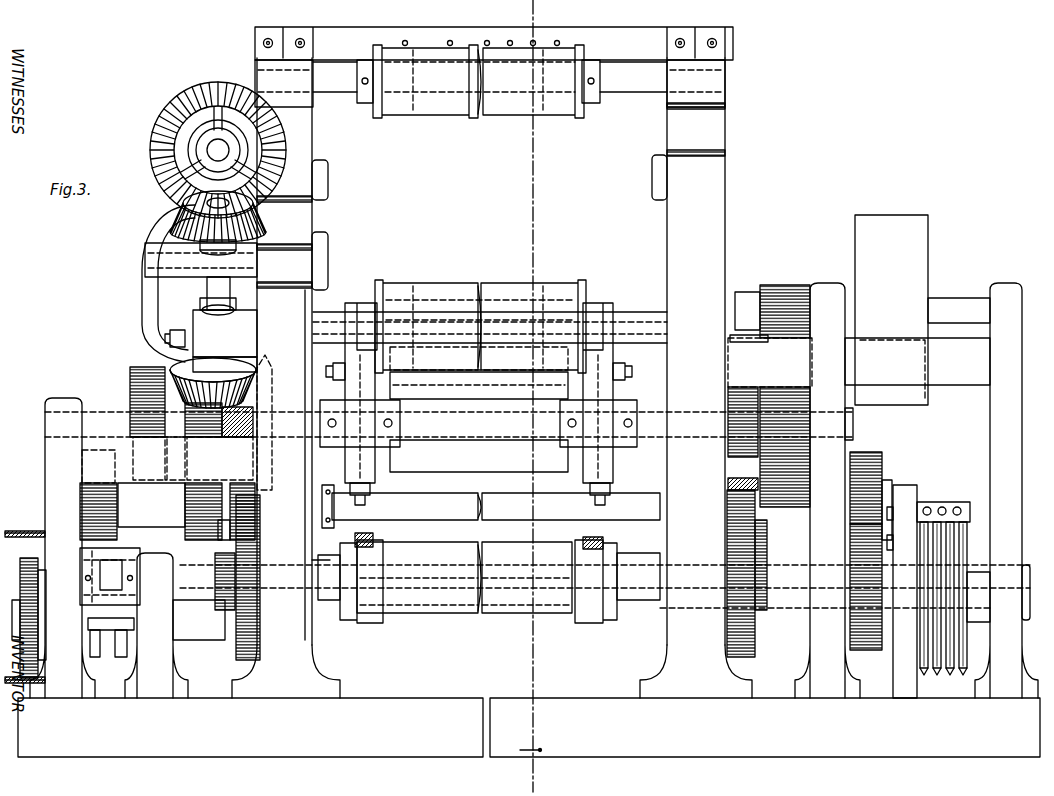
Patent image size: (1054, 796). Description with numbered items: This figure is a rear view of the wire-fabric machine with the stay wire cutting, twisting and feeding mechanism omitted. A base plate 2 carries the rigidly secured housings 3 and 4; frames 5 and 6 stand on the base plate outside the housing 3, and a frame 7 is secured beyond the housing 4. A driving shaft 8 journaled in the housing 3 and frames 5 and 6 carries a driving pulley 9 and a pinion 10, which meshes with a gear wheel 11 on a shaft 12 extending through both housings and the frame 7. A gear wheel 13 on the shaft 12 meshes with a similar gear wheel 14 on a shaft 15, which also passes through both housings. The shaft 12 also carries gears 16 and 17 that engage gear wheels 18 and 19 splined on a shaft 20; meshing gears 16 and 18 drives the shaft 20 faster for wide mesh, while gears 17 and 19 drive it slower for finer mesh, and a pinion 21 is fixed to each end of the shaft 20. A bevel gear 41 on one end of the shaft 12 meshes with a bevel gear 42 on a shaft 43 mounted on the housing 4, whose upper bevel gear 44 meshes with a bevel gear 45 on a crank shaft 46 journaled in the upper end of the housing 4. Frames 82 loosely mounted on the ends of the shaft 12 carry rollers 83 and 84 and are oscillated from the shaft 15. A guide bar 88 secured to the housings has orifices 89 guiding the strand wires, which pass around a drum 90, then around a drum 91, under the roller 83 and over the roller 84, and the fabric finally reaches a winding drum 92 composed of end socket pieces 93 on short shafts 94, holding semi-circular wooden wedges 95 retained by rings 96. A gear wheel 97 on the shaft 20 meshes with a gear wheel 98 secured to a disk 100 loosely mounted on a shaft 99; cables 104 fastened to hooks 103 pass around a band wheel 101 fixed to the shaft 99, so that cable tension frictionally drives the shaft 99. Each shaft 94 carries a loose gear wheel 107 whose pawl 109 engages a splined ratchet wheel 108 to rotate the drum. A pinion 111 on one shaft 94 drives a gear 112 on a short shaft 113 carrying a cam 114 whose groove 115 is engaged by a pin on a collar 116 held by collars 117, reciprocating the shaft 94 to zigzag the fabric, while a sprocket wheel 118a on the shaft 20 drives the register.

The base plate 2 is at (529, 729).
The housing 3 is at (696, 378).
The housing 4 is at (286, 378).
The frame 5 is at (827, 490).
The frame 6 is at (1006, 490).
The frame 7 is at (62, 548).
The driving shaft 8 is at (917, 341).
The driving pulley 9 is at (891, 310).
The pinion 10 is at (778, 290).
The gear wheel 11 is at (790, 432).
The shaft 12 is at (860, 424).
The gear wheel 13 is at (740, 405).
The gear wheel 14 is at (735, 338).
The shaft 15 is at (636, 355).
The gear 16 is at (147, 388).
The gear 17 is at (206, 425).
The gear wheel 18 is at (98, 492).
The gear wheel 19 is at (200, 495).
The shaft 20 is at (389, 505).
The pinion 21 is at (730, 485).
The bevel gear 41 is at (248, 400).
The bevel gear 42 is at (190, 370).
The shaft 43 is at (232, 303).
The bevel gear 44 is at (262, 227).
The bevel gear 45 is at (162, 122).
The crank shaft 46 is at (208, 160).
The frame 82 is at (345, 390).
The roller 83 is at (479, 385).
The roller 84 is at (479, 456).
The guide bar 88 is at (494, 67).
The orifices 89 is at (533, 41).
The drum 90 is at (478, 81).
The drum 91 is at (480, 326).
The winding drum 92 is at (547, 588).
The end socket pieces 93 is at (489, 576).
The short shaft 94 is at (318, 578).
The wooden wedges 95 is at (409, 581).
The ring 96 is at (373, 538).
The gear wheel 97 is at (880, 460).
The gear wheel 98 is at (866, 640).
The shaft 99 is at (322, 603).
The disk 100 is at (912, 494).
The band wheel 101 is at (962, 550).
The hooks 103 is at (945, 528).
The cables 104 is at (943, 679).
The gear wheel 107 is at (252, 555).
The ratchet wheel 108 is at (220, 605).
The pawl 109 is at (252, 515).
The pinion 111 is at (28, 545).
The gear 112 is at (38, 622).
The short shaft 113 is at (40, 625).
The cam 114 is at (122, 655).
The groove 115 is at (128, 626).
The collar 116 is at (118, 552).
The collars 117 is at (135, 555).
The sprocket wheel 118a is at (328, 505).